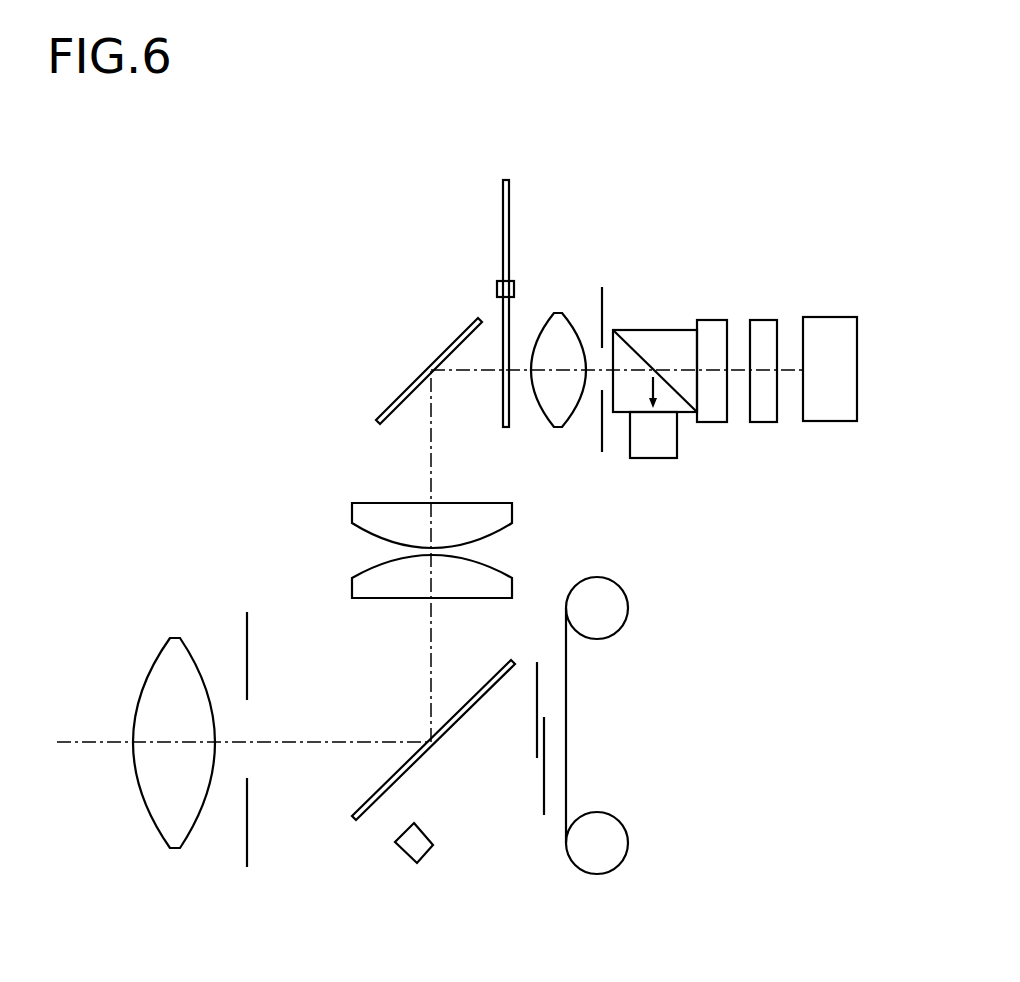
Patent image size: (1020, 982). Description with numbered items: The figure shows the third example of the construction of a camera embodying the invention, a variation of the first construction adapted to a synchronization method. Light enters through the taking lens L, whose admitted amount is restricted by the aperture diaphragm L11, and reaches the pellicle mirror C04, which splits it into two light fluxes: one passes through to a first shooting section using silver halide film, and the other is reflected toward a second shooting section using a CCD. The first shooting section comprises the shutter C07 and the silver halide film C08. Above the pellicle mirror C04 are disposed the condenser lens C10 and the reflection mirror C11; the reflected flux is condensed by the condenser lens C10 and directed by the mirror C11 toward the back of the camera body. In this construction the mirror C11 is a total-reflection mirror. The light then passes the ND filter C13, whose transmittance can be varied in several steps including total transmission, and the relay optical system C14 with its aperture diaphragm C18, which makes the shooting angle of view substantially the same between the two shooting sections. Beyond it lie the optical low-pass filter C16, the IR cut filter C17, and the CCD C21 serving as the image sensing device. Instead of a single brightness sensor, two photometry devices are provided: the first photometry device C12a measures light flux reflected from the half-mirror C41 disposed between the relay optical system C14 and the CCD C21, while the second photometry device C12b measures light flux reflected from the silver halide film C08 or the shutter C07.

The taking lens L is at (177, 610).
The aperture diaphragm L11 is at (248, 850).
The pellicle mirror C04 is at (448, 735).
The second photometry device C12b is at (404, 853).
The shutter C07 is at (543, 787).
The silver halide film C08 is at (567, 688).
The condenser lens C10 is at (495, 570).
The reflection mirror C11 is at (437, 358).
The ND filter C13 is at (504, 200).
The relay optical system C14 is at (558, 303).
The aperture diaphragm C18 is at (602, 432).
The half-mirror C41 is at (632, 348).
The first photometry device C12a is at (663, 460).
The optical low-pass filter C16 is at (712, 320).
The IR cut filter C17 is at (763, 320).
The CCD C21 is at (835, 422).